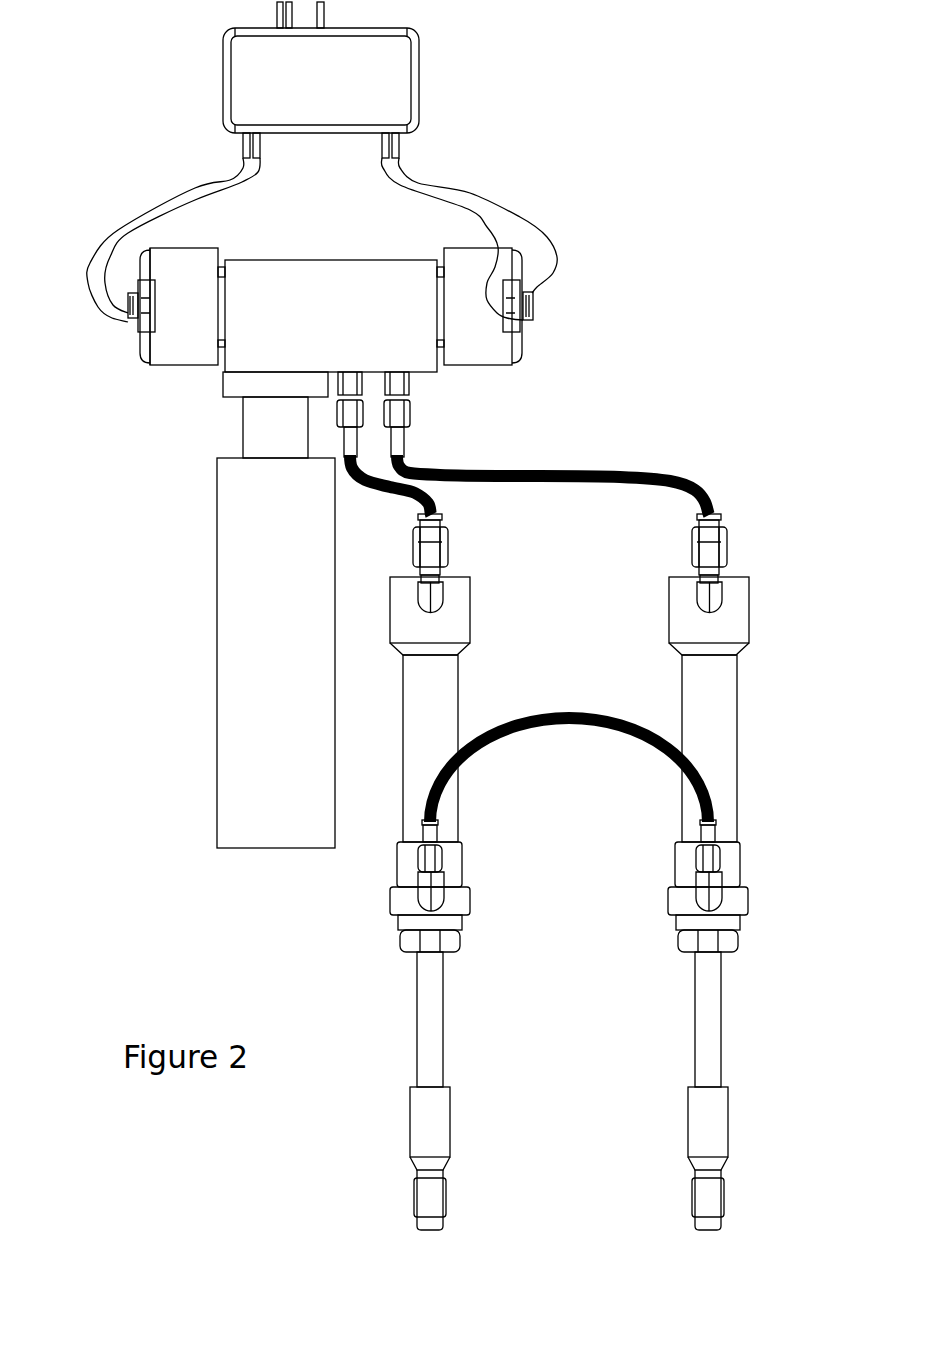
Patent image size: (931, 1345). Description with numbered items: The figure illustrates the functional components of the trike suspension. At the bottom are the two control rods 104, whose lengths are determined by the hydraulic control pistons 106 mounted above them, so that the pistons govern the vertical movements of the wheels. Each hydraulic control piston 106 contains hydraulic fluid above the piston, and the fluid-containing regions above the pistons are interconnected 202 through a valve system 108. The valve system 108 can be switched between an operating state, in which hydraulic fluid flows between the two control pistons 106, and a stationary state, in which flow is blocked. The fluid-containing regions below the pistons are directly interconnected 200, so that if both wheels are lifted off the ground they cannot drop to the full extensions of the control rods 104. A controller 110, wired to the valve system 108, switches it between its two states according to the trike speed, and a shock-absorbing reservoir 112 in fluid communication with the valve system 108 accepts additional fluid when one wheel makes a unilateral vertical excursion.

The control rod 104 is at (443, 1010).
The hydraulic control piston 106 is at (458, 672).
The valve system 108 is at (350, 333).
The controller 110 is at (419, 57).
The shock-absorbing reservoir 112 is at (293, 653).
The direct interconnection of fluid regions below the pistons 200 is at (635, 737).
The interconnection of fluid regions above the pistons 202 is at (661, 478).